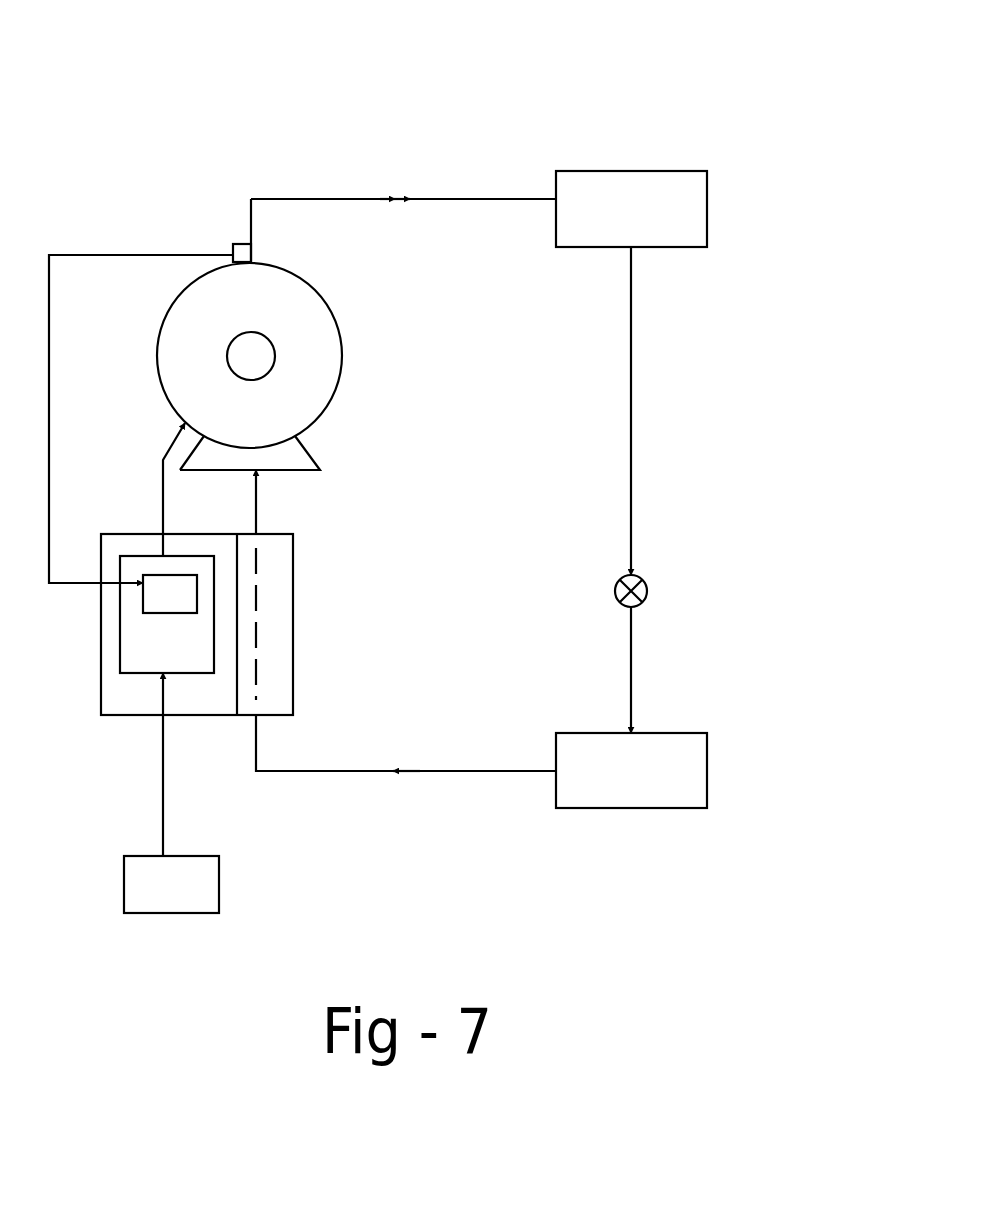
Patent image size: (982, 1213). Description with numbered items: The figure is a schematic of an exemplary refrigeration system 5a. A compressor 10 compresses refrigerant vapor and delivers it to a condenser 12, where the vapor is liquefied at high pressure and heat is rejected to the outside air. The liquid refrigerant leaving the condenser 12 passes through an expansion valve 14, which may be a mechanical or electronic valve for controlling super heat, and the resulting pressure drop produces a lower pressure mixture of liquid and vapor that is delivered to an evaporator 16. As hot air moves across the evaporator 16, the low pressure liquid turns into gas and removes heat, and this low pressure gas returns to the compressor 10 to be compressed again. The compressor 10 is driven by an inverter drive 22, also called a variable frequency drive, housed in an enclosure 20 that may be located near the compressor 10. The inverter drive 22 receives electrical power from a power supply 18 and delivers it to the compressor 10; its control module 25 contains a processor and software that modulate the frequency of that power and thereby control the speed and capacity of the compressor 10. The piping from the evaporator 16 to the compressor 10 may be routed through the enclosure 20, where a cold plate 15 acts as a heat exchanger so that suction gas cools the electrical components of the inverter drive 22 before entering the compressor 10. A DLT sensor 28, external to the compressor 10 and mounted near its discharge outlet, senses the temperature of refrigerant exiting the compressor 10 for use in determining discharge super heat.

The refrigeration system 5a is at (237, 74).
The compressor 10 is at (343, 347).
The condenser 12 is at (618, 171).
The expansion valve 14 is at (645, 582).
The evaporator 16 is at (674, 733).
The power supply 18 is at (219, 900).
The enclosure 20 is at (122, 716).
The inverter drive 22 is at (120, 653).
The control module 25 is at (162, 613).
The cold plate 15 is at (282, 630).
The DLT sensor 28 is at (242, 243).